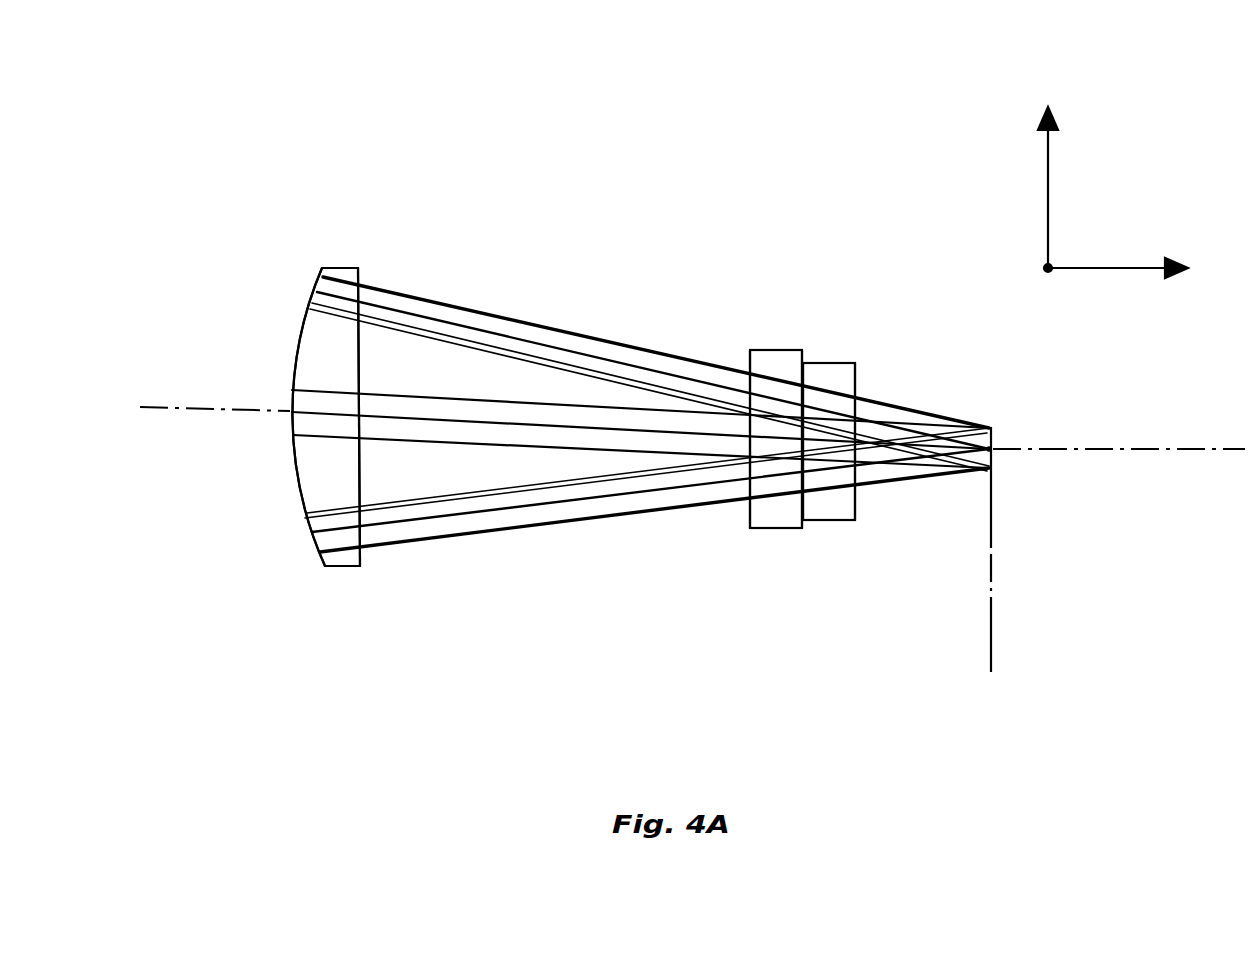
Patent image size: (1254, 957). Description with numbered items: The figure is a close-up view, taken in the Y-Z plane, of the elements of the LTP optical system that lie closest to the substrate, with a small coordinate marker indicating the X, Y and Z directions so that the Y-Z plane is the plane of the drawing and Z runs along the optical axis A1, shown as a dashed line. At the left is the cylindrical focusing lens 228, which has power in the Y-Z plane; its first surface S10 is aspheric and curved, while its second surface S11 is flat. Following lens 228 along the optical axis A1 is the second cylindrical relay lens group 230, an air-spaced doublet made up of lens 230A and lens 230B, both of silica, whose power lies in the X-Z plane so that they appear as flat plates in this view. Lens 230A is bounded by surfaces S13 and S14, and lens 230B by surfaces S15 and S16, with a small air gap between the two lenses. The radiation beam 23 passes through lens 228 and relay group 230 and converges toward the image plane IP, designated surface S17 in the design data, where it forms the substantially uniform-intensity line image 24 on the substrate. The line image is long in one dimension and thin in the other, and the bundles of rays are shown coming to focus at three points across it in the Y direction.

The cylindrical focusing lens 228 is at (337, 267).
The second cylindrical relay lens group 230 is at (806, 403).
The lens 230A is at (750, 350).
The lens 230B is at (855, 363).
The radiation beam 23 is at (937, 418).
The line image 24 is at (993, 449).
The optical axis A1 is at (1185, 498).
The image plane IP is at (993, 632).
The surface S10 is at (313, 542).
The surface S11 is at (383, 543).
The surface S13 is at (750, 518).
The surface S14 is at (800, 525).
The surface S15 is at (808, 520).
The surface S16 is at (858, 497).
The surface S17 is at (990, 647).
The X axis X is at (1030, 271).
The Y axis Y is at (1047, 93).
The Z axis Z is at (1202, 271).